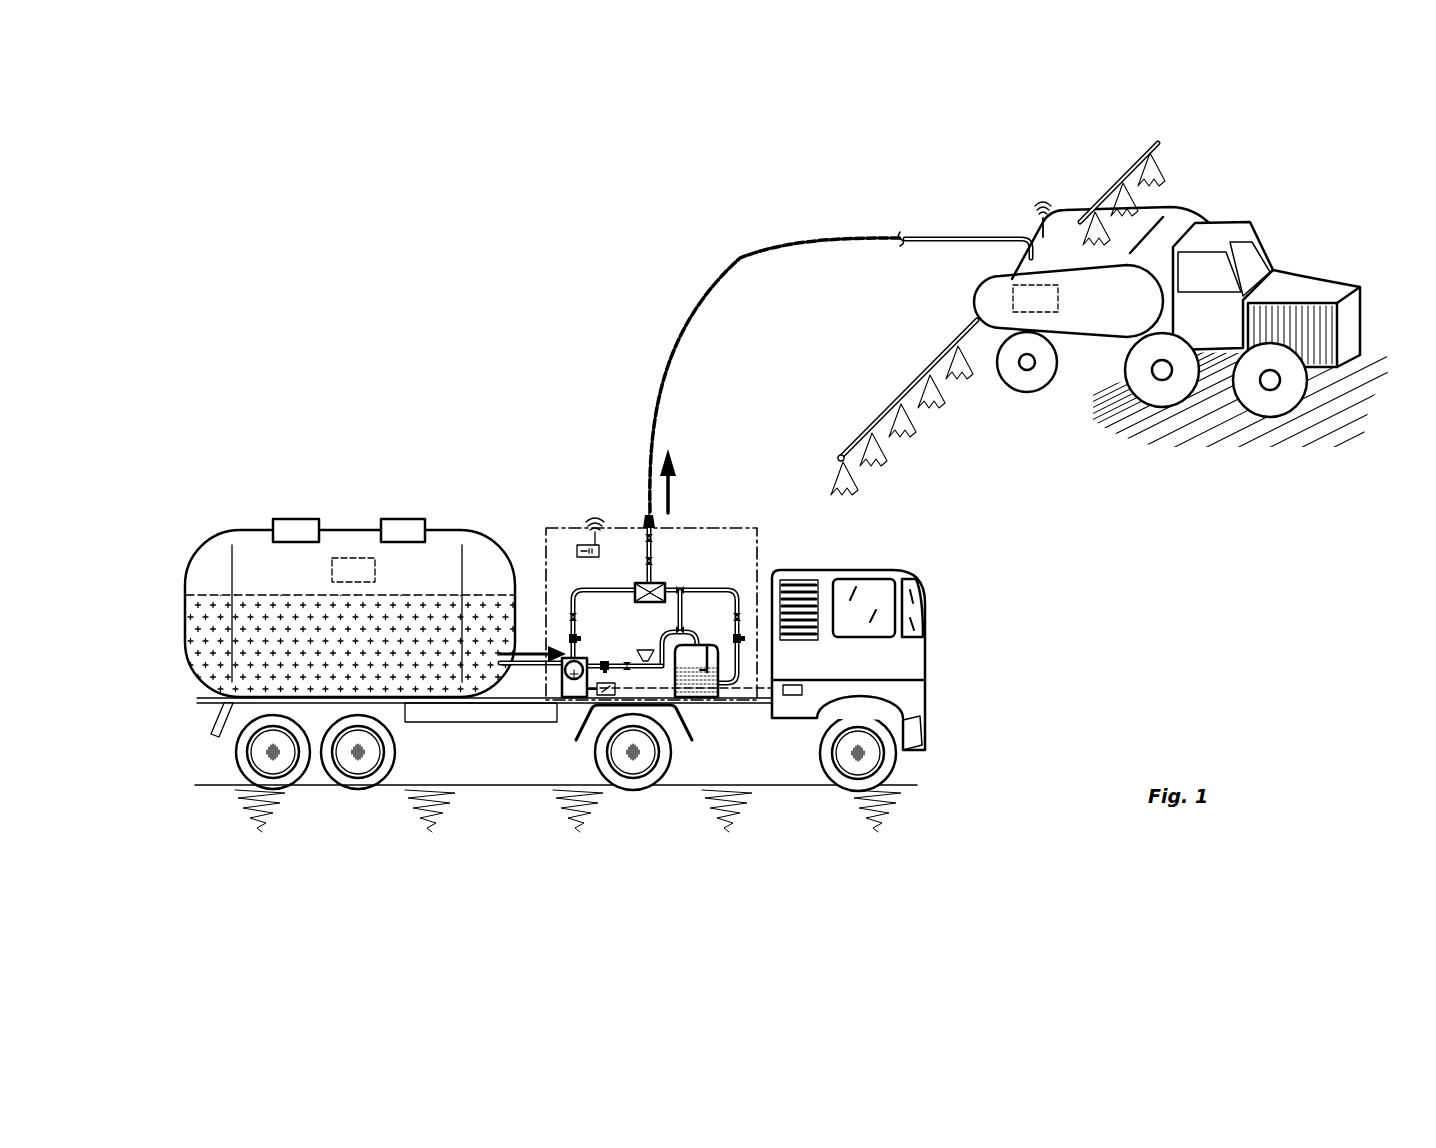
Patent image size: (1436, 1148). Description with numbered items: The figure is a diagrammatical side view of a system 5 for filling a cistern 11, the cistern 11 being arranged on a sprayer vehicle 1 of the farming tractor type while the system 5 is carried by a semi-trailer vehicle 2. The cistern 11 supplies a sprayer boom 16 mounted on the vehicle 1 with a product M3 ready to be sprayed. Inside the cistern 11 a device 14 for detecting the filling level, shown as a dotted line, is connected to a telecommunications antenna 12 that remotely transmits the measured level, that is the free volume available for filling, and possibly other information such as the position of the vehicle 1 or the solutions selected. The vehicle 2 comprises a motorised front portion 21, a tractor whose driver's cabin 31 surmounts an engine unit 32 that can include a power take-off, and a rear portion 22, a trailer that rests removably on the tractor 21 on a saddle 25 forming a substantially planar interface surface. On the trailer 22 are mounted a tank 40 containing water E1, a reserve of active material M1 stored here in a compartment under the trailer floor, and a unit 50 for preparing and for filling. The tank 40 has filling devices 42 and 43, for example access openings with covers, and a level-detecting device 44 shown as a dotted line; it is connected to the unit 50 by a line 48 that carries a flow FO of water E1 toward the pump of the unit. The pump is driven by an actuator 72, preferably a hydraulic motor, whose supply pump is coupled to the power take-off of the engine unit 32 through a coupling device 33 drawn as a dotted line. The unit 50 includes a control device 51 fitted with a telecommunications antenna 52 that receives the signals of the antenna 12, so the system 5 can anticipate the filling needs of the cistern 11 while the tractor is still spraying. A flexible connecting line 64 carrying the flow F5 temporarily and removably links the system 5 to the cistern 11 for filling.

The sprayer vehicle 1 is at (1115, 358).
The semi-trailer vehicle 2 is at (955, 627).
The system for filling 5 is at (499, 432).
The cistern 11 is at (1167, 320).
The telecommunications antenna 12 is at (1024, 215).
The device for detecting the filling level 14 is at (1035, 298).
The sprayer boom 16 is at (998, 321).
The front portion 21 is at (750, 682).
The rear portion 22 is at (488, 772).
The saddle 25 is at (755, 706).
The driver's cabin 31 is at (828, 586).
The engine unit 32 is at (792, 696).
The coupling device 33 is at (740, 690).
The tank 40 is at (342, 574).
The device for filling 42 is at (283, 520).
The device for filling 43 is at (413, 520).
The device for detecting the filling level 44 is at (357, 560).
The line 48 is at (525, 668).
The unit for preparing and for filling 50 is at (634, 580).
The control device 51 is at (600, 547).
The telecommunications antenna 52 is at (590, 512).
The connecting line 64 is at (728, 280).
The actuator 72 is at (612, 682).
The water E1 is at (186, 603).
The flow of water FO is at (533, 647).
The flow of liquid F5 is at (681, 481).
The reserve of active material M1 is at (440, 708).
The product ready to be sprayed M3 is at (900, 434).